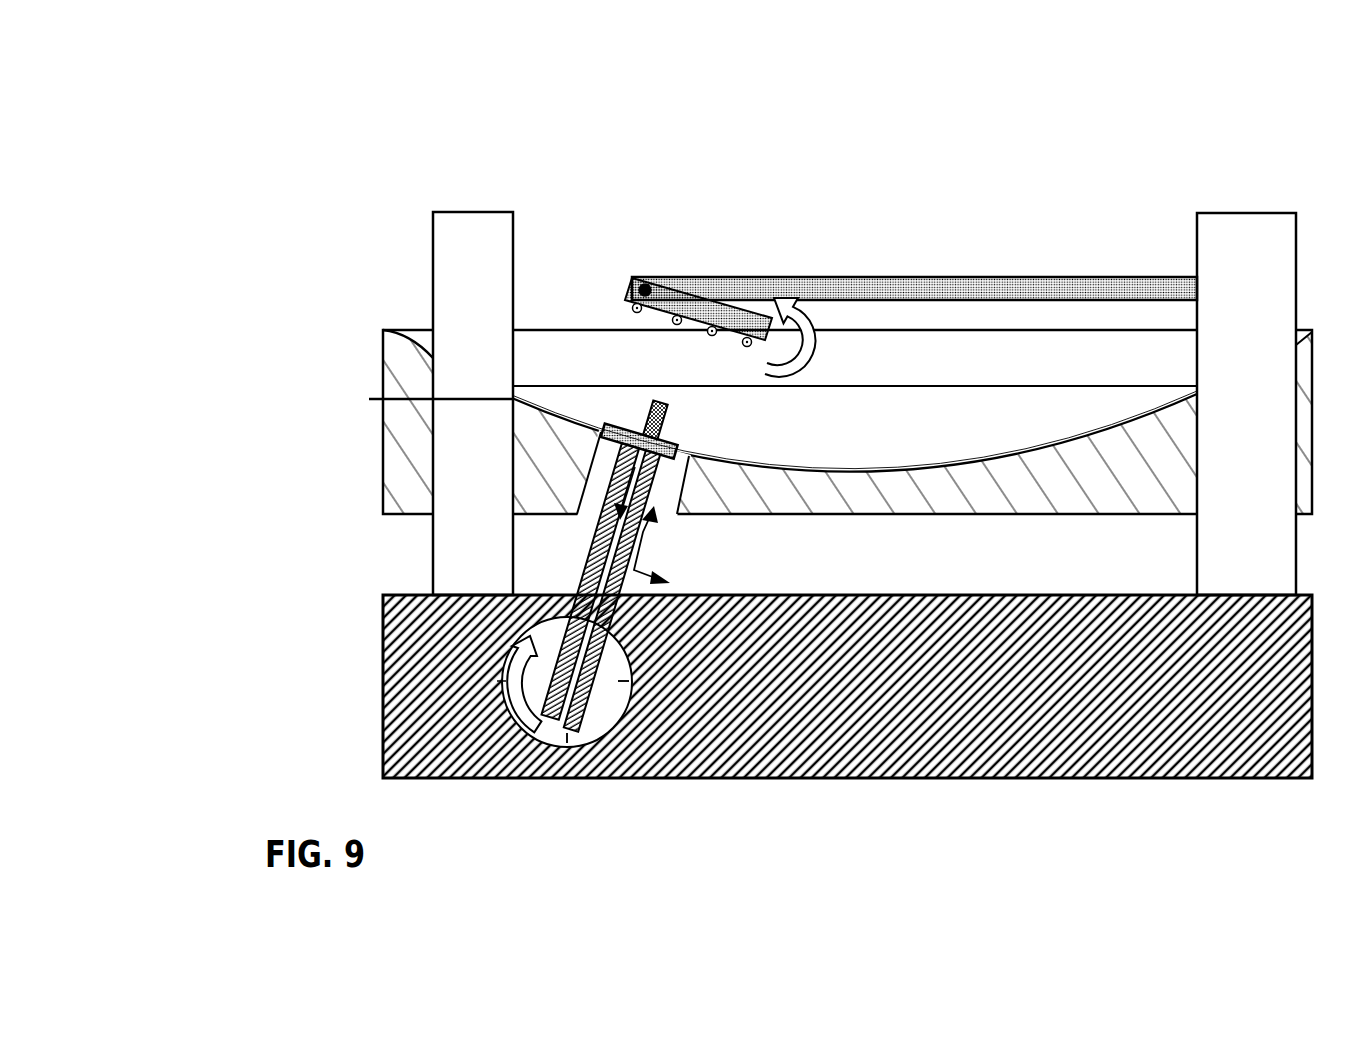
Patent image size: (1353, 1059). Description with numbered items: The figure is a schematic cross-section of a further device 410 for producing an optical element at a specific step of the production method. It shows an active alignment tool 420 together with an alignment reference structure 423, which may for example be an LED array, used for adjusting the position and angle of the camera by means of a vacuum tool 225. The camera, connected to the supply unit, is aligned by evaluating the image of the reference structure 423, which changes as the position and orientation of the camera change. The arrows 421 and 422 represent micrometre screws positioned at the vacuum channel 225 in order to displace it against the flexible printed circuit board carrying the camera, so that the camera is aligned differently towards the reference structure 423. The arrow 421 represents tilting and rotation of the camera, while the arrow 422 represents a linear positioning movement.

The device for producing the optical element 410 is at (190, 131).
The active alignment tool 420 is at (578, 557).
The arrow representing tilting and rotation 421 is at (535, 725).
The arrow representing linear positioning movement 422 is at (648, 540).
The alignment reference structure 423 is at (688, 312).
The vacuum tool 225 is at (585, 680).